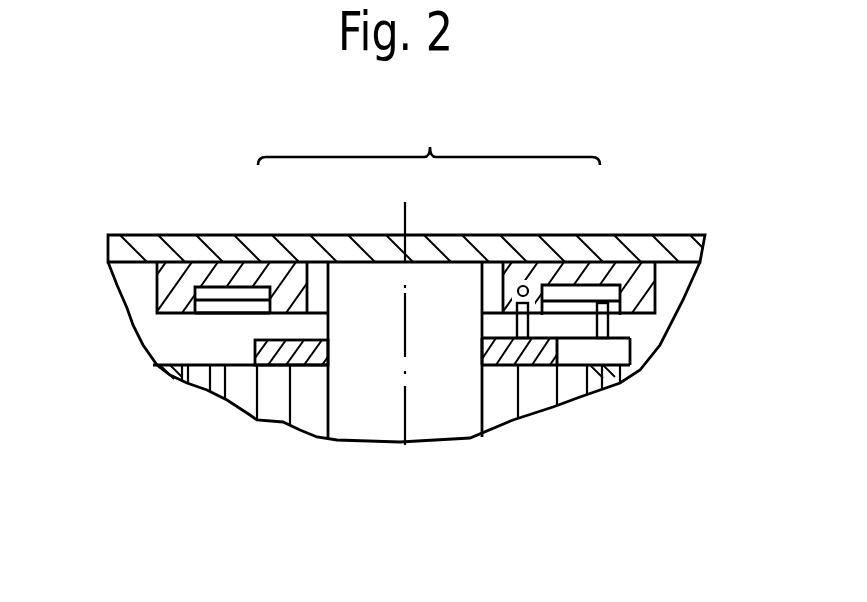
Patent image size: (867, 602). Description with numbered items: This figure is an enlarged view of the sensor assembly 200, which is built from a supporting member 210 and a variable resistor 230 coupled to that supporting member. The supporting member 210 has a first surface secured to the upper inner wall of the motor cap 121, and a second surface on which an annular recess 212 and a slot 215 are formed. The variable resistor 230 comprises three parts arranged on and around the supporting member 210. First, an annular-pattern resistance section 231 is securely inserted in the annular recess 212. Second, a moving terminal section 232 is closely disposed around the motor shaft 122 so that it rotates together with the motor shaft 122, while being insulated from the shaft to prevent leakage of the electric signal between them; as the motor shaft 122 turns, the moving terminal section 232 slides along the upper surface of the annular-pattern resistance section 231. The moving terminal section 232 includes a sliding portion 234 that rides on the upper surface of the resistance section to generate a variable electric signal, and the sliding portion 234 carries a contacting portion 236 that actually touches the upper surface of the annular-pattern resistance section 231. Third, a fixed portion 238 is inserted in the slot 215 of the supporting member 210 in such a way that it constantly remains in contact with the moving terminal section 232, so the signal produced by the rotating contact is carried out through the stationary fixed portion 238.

The motor cap 121 is at (655, 250).
The motor shaft 122 is at (453, 415).
The sensor assembly 200 is at (170, 347).
The supporting member 210 is at (187, 275).
The annular recess 212 is at (208, 310).
The slot 215 is at (530, 295).
The variable resistor 230 is at (429, 132).
The annular-pattern resistance section 231 is at (252, 290).
The moving terminal section 232 is at (312, 352).
The sliding portion 234 is at (628, 310).
The contacting portion 236 is at (603, 303).
The fixed portion 238 is at (517, 330).